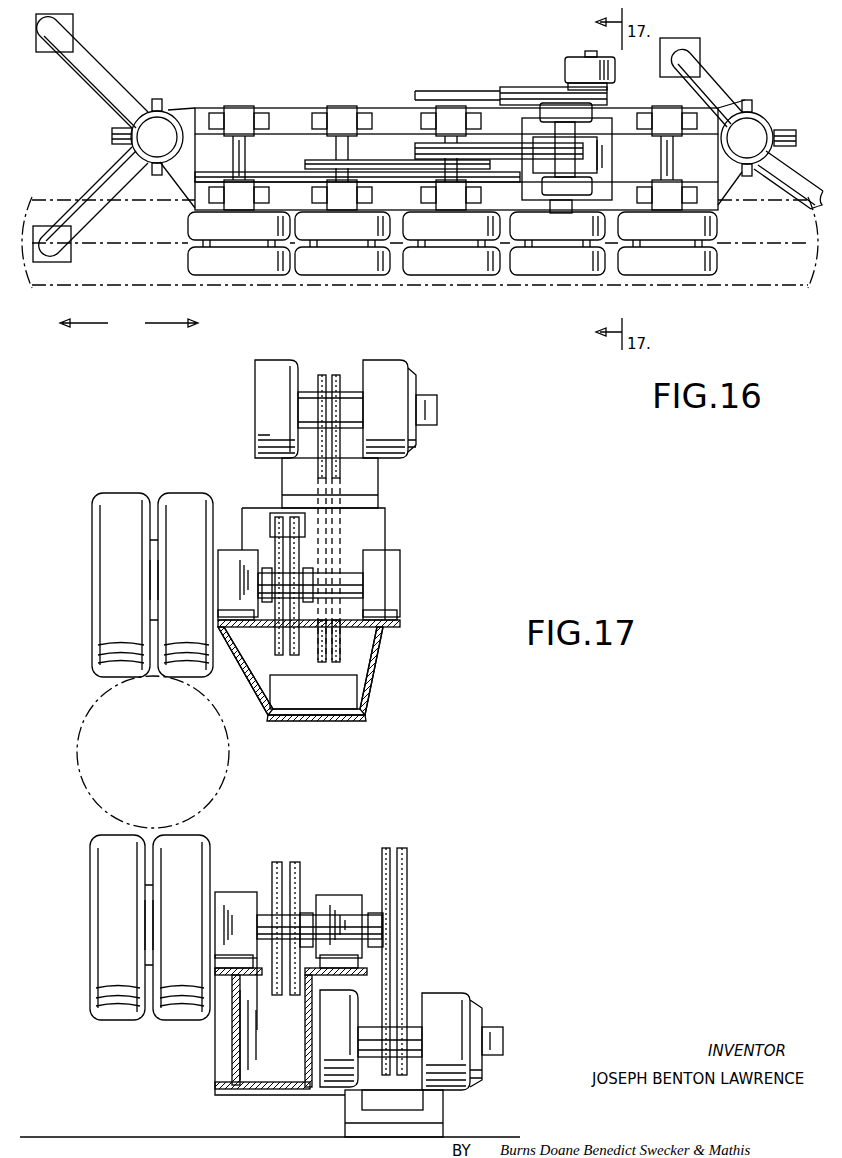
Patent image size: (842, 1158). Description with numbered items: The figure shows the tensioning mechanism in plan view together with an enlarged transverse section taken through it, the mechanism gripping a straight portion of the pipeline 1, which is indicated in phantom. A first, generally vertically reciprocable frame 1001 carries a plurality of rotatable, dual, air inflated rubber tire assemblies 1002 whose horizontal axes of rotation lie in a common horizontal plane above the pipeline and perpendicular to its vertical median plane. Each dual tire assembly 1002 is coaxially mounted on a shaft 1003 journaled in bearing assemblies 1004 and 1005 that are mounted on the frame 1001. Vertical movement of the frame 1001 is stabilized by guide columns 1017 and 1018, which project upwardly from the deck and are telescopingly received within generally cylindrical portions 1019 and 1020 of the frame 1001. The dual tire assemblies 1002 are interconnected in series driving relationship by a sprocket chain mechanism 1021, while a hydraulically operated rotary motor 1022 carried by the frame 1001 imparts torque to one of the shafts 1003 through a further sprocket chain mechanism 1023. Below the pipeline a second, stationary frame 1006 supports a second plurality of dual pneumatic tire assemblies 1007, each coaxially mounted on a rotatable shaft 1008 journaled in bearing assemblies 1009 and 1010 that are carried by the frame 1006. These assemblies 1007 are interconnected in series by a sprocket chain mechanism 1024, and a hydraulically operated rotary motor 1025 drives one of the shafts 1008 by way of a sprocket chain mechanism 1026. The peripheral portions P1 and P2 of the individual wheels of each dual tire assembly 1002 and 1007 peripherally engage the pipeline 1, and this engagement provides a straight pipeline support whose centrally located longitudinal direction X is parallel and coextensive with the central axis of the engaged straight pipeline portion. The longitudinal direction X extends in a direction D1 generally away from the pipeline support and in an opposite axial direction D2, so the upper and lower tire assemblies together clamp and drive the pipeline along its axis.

In FIG. 16, the first frame 1001 is at (178, 185).
In FIG. 17, the first frame 1001 is at (386, 648).
In FIG. 16, the dual tire assemblies 1002 is at (232, 264).
In FIG. 17, the dual tire assemblies 1002 is at (148, 492).
In FIG. 16, the shaft 1003 is at (240, 152).
In FIG. 17, the shaft 1003 is at (345, 575).
In FIG. 16, the bearing assembly 1004 is at (236, 110).
In FIG. 17, the bearing assembly 1004 is at (390, 578).
In FIG. 16, the bearing assembly 1005 is at (232, 206).
In FIG. 17, the bearing assembly 1005 is at (232, 558).
In FIG. 17, the second stationary frame 1006 is at (228, 1050).
In FIG. 17, the dual tire assemblies 1007 is at (116, 1000).
In FIG. 17, the shaft 1008 is at (260, 942).
In FIG. 17, the bearing assembly 1009 is at (238, 906).
In FIG. 17, the bearing assembly 1010 is at (340, 906).
In FIG. 16, the guide column 1017 is at (760, 128).
In FIG. 16, the guide column 1018 is at (168, 128).
In FIG. 16, the cylindrical portion 1019 is at (766, 112).
In FIG. 16, the cylindrical portion 1020 is at (150, 108).
In FIG. 16, the sprocket chain mechanism 1021 is at (305, 160).
In FIG. 17, the sprocket chain mechanism 1021 is at (282, 655).
In FIG. 16, the hydraulically operated rotary motor 1022 is at (552, 112).
In FIG. 17, the hydraulically operated rotary motor 1022 is at (395, 455).
In FIG. 16, the sprocket chain mechanism 1023 is at (418, 158).
In FIG. 17, the sprocket chain mechanism 1023 is at (330, 378).
In FIG. 17, the sprocket chain mechanism 1024 is at (284, 872).
In FIG. 16, the hydraulically operated rotary motor 1025 is at (578, 70).
In FIG. 17, the hydraulically operated rotary motor 1025 is at (456, 1012).
In FIG. 16, the sprocket chain mechanism 1026 is at (452, 96).
In FIG. 17, the sprocket chain mechanism 1026 is at (400, 888).
In FIG. 16, the pipeline 1 is at (90, 290).
In FIG. 17, the pipeline 1 is at (158, 739).
In FIG. 16, the longitudinal direction of pipeline support X is at (738, 243).
In FIG. 17, the longitudinal direction of pipeline support X is at (152, 754).
In FIG. 17, the peripheral portion P1 is at (118, 680).
In FIG. 17, the peripheral portion P2 is at (170, 678).
In FIG. 16, the direction D1 is at (84, 337).
In FIG. 16, the axial direction D2 is at (171, 337).